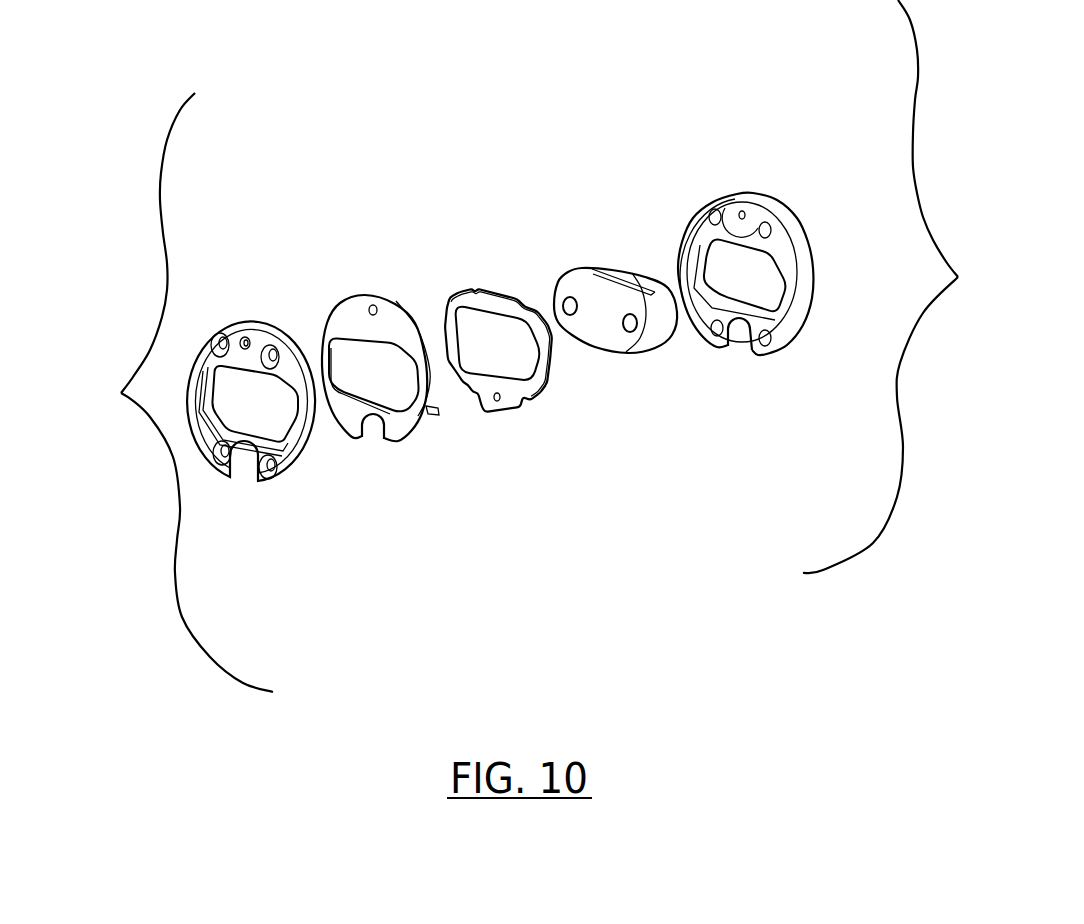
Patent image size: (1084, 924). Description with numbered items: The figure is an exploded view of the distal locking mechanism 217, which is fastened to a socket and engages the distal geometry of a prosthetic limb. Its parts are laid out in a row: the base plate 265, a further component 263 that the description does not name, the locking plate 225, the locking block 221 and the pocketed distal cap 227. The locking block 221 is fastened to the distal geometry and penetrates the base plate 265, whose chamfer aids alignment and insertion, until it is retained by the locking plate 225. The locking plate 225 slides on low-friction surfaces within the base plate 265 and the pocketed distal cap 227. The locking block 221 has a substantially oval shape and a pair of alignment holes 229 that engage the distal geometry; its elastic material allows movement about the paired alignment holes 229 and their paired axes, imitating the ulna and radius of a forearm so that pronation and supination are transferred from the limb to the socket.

The distal locking mechanism 217 is at (503, 346).
The base plate 265 is at (233, 338).
The mounting plate 263 is at (360, 313).
The locking plate 225 is at (493, 304).
The locking block 221 is at (598, 295).
The alignment holes 229 is at (553, 323).
The pocketed distal cap 227 is at (792, 237).